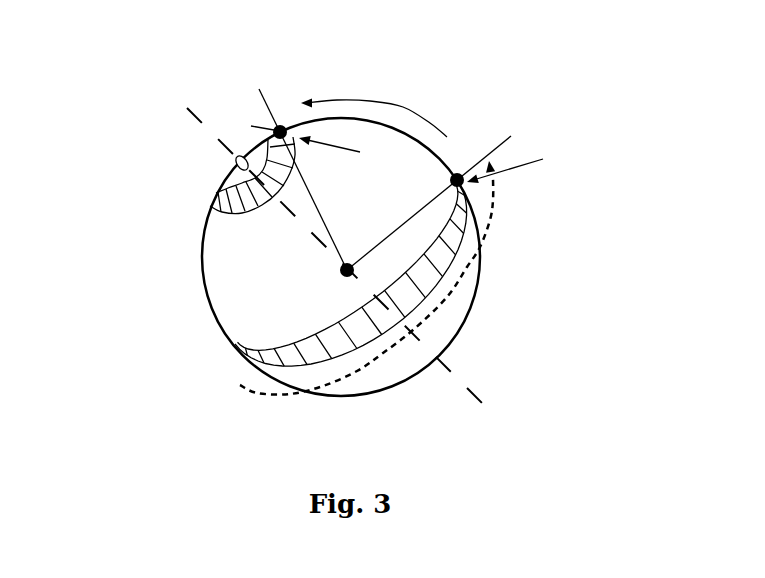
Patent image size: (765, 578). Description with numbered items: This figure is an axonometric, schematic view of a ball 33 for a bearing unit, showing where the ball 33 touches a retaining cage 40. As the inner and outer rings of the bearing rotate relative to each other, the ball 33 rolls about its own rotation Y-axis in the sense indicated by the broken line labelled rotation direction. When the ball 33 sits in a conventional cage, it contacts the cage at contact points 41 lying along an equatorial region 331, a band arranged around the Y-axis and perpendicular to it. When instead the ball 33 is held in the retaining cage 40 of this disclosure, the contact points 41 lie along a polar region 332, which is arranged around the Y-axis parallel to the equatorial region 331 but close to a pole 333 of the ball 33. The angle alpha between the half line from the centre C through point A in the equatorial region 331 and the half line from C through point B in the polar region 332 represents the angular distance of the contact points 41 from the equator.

The retaining cage 40 is at (424, 31).
The ball 33 is at (168, 310).
The contact points 41 is at (280, 132).
The equatorial region 331 is at (258, 359).
The polar region 332 is at (221, 204).
The pole 333 is at (238, 146).